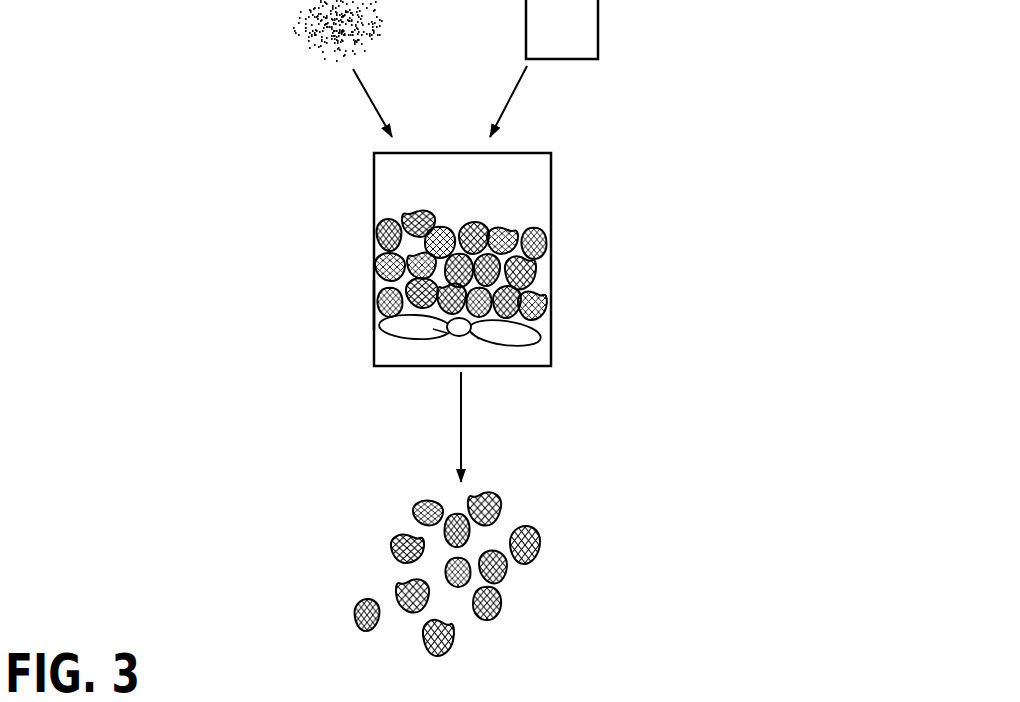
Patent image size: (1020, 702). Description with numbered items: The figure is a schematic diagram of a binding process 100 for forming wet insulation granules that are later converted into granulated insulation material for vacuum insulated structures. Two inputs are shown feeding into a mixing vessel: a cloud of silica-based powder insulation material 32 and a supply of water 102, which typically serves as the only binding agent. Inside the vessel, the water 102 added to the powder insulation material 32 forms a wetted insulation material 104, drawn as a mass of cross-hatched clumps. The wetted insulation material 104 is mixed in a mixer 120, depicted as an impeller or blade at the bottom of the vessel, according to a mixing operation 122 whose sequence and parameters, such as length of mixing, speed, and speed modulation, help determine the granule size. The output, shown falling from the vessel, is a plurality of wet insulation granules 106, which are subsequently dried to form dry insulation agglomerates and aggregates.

The silica-based powder insulation material 32 is at (323, 67).
The binding process 100 is at (370, 178).
The water 102 is at (570, 33).
The wetted insulation material 104 is at (523, 220).
The wet insulation granules 106 is at (528, 524).
The mixer 120 is at (374, 345).
The mixing operation 122 is at (370, 305).